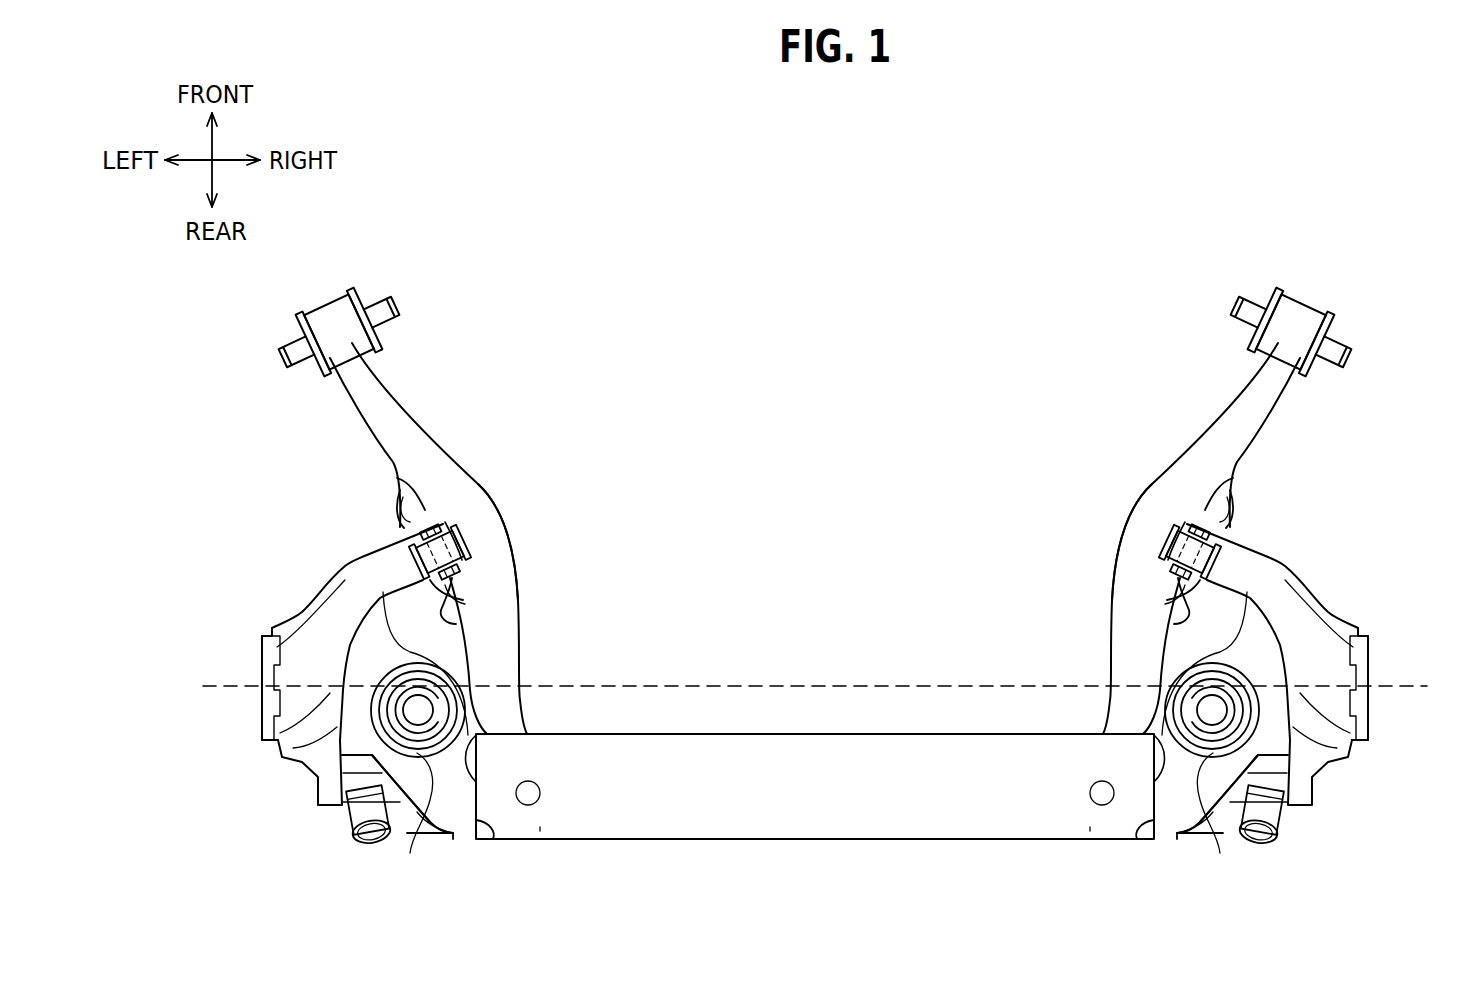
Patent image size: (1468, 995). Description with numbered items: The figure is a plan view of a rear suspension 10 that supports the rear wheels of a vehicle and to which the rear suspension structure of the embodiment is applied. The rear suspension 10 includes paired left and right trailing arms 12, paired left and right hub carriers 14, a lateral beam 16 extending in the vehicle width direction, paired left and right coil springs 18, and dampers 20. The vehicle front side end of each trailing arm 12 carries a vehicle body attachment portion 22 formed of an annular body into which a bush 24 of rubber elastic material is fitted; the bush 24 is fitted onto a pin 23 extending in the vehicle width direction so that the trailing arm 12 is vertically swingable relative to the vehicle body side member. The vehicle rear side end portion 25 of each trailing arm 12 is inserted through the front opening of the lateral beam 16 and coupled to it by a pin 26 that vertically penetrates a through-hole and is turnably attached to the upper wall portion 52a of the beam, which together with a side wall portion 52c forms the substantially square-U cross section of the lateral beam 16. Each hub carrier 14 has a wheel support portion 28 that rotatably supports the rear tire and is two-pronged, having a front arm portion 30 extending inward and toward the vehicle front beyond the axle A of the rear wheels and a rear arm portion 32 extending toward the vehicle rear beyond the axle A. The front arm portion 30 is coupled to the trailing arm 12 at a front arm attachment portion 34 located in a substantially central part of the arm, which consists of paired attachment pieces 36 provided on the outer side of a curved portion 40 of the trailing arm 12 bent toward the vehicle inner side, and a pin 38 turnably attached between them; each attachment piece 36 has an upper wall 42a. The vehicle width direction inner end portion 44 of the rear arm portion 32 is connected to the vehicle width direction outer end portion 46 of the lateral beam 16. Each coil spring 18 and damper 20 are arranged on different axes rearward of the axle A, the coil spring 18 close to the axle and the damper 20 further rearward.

The rear suspension 10 is at (932, 152).
The trailing arm 12 is at (498, 438).
The hub carrier 14 is at (290, 784).
The lateral beam 16 is at (822, 860).
The coil spring 18 is at (432, 820).
The damper 20 is at (355, 847).
The vehicle body attachment portion 22 is at (311, 291).
The pin 23 is at (396, 303).
The bush 24 is at (300, 338).
The vehicle rear side end portion 25 is at (540, 827).
The pin 26 is at (537, 792).
The wheel support portion 28 is at (252, 716).
The front arm portion 30 is at (293, 598).
The rear arm portion 32 is at (406, 826).
The front arm attachment portion 34 is at (464, 535).
The attachment piece 36 is at (430, 628).
The pin 38 is at (412, 558).
The curved portion 40 is at (507, 527).
The upper wall 42a is at (457, 602).
The vehicle width direction inner end portion 44 is at (493, 840).
The vehicle width direction outer end portion 46 is at (497, 728).
The upper wall portion 52a is at (900, 823).
The side wall portion 52c is at (970, 843).
The axle A is at (228, 683).